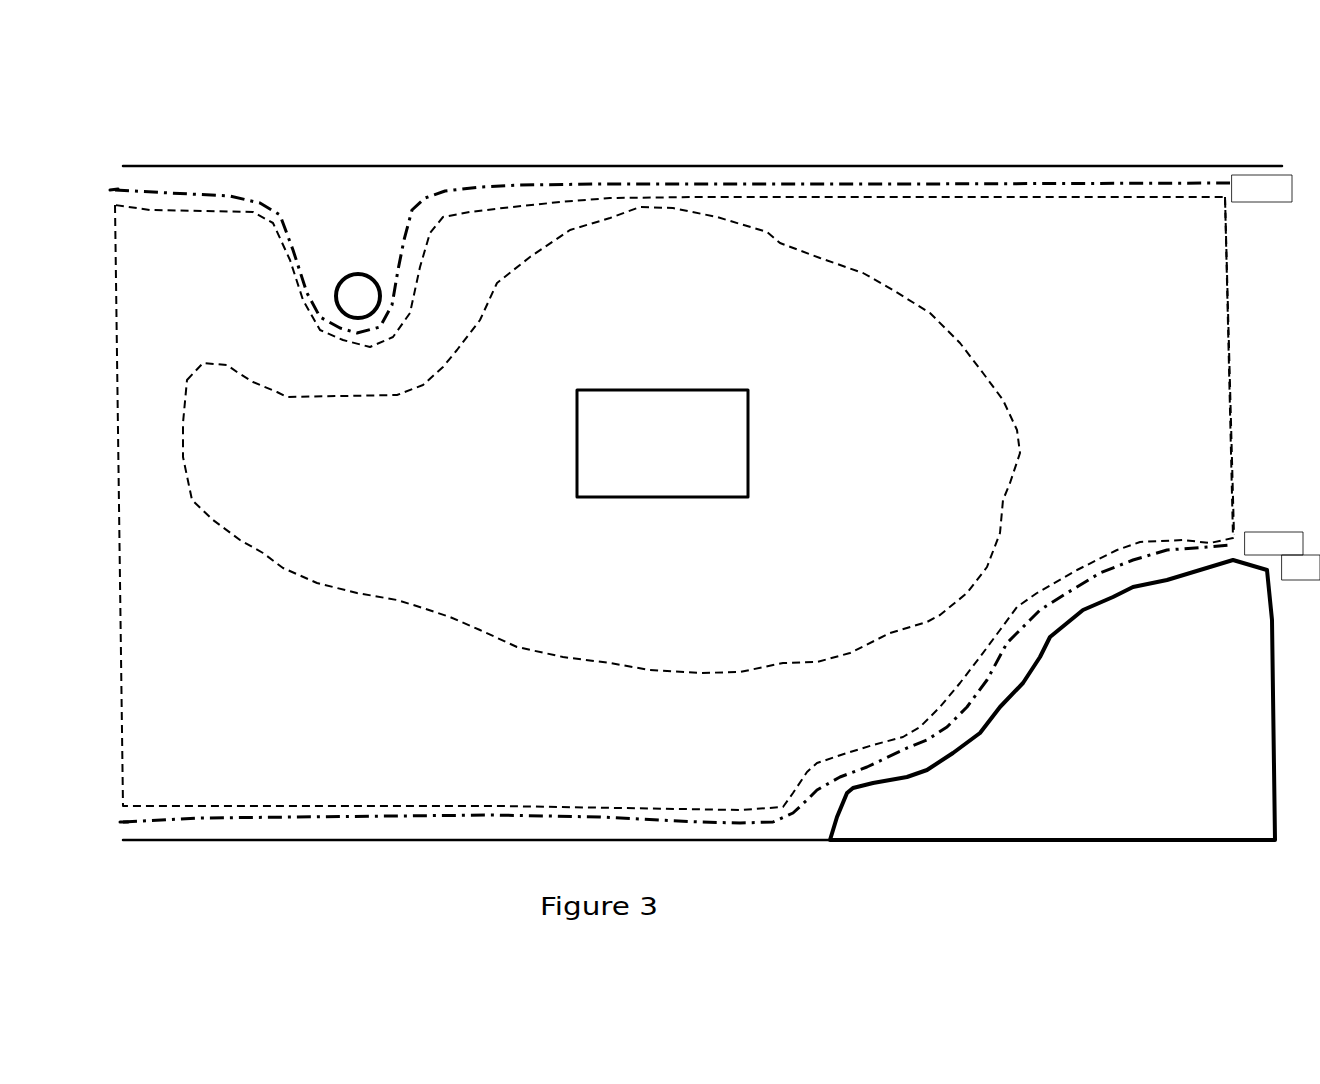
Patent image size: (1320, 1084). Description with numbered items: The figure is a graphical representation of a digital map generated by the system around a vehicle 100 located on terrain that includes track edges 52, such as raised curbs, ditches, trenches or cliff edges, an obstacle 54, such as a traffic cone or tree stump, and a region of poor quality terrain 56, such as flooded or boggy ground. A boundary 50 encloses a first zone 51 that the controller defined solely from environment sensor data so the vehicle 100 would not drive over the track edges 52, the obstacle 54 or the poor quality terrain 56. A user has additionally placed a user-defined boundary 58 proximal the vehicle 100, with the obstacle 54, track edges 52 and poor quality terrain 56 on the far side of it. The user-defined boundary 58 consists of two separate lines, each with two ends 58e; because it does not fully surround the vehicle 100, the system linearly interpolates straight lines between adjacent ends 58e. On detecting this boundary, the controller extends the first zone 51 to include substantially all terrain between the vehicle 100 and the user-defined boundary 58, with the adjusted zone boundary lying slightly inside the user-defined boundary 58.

The boundary of first zone 50 is at (1007, 400).
The first zone 51 is at (834, 442).
The track edges 52 is at (678, 165).
The obstacle 54 is at (340, 277).
The region of poor quality terrain 56 is at (1093, 749).
The user-defined boundary 58 is at (903, 182).
The ends of user-defined boundary 58e is at (115, 192).
The vehicle 100 is at (693, 388).